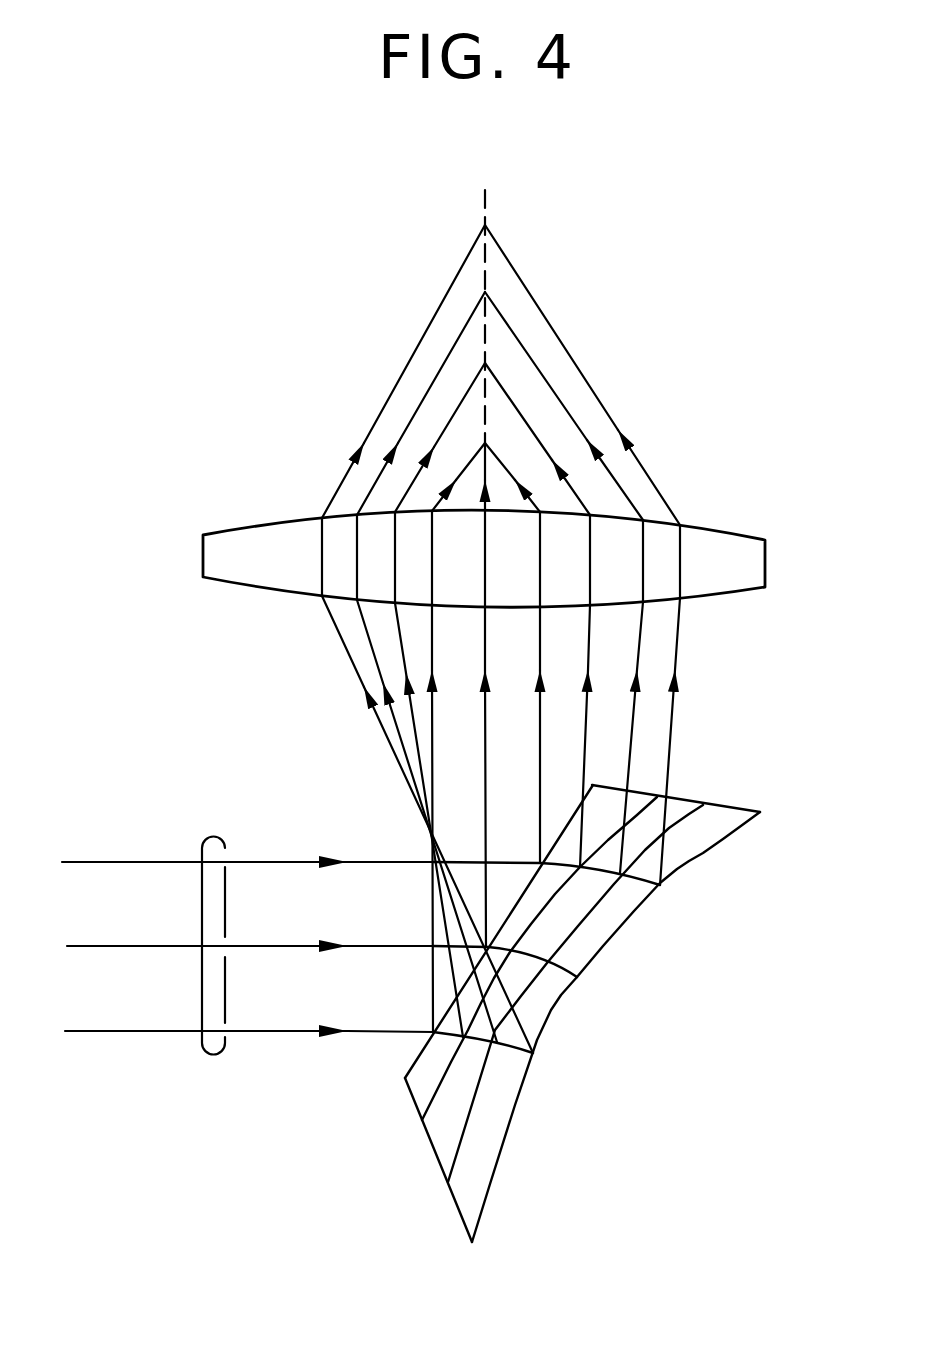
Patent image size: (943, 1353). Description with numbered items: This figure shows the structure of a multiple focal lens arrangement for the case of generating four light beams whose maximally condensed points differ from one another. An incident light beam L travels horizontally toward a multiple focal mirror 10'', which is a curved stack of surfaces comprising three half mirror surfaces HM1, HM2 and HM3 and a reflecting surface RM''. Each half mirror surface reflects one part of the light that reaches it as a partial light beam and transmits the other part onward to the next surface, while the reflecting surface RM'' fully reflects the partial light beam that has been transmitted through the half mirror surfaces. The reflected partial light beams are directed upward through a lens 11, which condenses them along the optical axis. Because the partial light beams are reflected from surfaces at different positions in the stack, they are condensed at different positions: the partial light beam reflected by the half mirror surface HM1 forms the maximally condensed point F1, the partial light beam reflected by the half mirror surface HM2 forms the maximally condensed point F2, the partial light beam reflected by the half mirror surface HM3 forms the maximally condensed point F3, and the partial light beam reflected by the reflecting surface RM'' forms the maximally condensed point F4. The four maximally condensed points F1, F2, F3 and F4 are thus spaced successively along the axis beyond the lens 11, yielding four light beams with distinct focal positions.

The incident light beam L is at (214, 838).
The lens 11 is at (765, 560).
The multiple focal mirror 10'' is at (569, 1003).
The half mirror surface HM1 is at (414, 1056).
The half mirror surface HM2 is at (428, 1112).
The half mirror surface HM3 is at (452, 1160).
The reflecting surface RM'' is at (616, 1027).
The maximally condensed point F1 is at (486, 469).
The maximally condensed point F2 is at (492, 426).
The maximally condensed point F3 is at (500, 390).
The maximally condensed point F4 is at (501, 359).